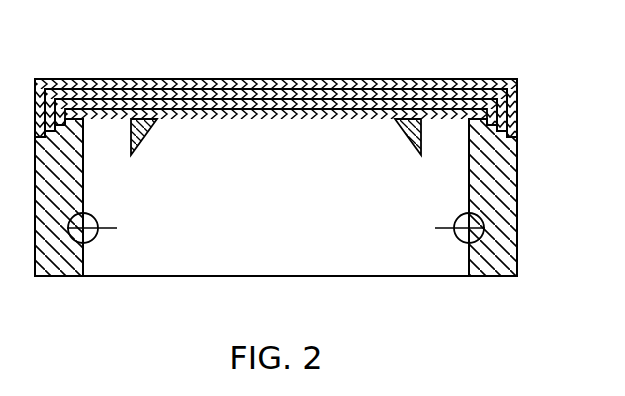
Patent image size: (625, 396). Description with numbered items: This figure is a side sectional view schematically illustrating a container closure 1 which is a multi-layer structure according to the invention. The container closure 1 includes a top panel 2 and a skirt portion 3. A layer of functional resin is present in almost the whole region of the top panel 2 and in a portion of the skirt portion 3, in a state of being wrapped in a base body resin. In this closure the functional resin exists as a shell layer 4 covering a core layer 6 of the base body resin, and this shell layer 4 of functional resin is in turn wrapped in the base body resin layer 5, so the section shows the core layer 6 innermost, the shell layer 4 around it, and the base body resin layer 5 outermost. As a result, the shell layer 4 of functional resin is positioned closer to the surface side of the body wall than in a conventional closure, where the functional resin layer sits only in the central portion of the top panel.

The container closure 1 is at (536, 68).
The top panel 2 is at (403, 79).
The skirt portion 3 is at (517, 187).
The shell layer of functional resin 4 is at (450, 79).
The base body resin layer 5 is at (492, 79).
The core layer of base body resin 6 is at (492, 113).